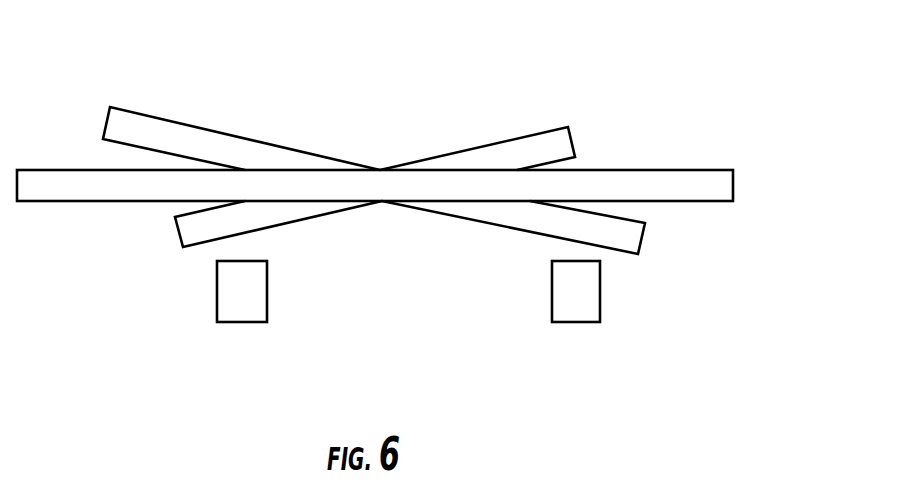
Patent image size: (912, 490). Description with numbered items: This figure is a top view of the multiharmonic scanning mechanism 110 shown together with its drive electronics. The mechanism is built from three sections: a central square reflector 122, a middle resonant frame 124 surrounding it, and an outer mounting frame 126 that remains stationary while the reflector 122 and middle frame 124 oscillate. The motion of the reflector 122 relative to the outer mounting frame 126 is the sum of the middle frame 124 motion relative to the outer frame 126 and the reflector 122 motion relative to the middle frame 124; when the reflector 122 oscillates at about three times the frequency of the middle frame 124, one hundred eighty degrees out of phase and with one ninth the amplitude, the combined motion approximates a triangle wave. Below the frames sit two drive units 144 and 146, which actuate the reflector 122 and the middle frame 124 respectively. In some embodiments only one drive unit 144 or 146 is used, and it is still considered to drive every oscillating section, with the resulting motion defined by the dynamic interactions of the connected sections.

The multiharmonic scanning mechanism 110 is at (700, 105).
The central square reflector 122 is at (488, 143).
The middle resonant frame 124 is at (153, 117).
The outer mounting frame 126 is at (725, 170).
The drive unit 144 is at (239, 322).
The drive unit 146 is at (575, 322).